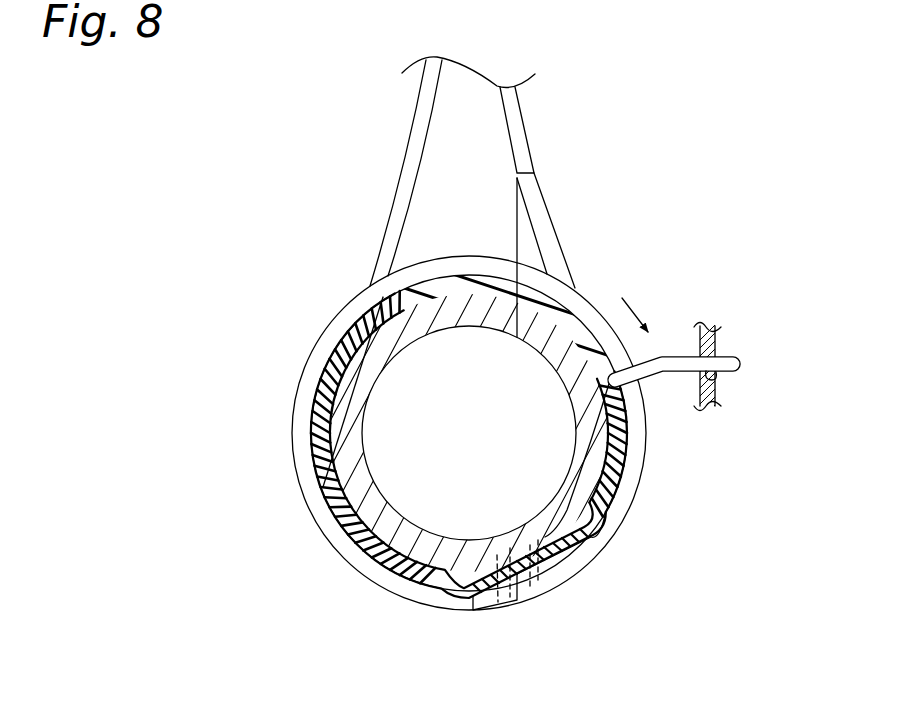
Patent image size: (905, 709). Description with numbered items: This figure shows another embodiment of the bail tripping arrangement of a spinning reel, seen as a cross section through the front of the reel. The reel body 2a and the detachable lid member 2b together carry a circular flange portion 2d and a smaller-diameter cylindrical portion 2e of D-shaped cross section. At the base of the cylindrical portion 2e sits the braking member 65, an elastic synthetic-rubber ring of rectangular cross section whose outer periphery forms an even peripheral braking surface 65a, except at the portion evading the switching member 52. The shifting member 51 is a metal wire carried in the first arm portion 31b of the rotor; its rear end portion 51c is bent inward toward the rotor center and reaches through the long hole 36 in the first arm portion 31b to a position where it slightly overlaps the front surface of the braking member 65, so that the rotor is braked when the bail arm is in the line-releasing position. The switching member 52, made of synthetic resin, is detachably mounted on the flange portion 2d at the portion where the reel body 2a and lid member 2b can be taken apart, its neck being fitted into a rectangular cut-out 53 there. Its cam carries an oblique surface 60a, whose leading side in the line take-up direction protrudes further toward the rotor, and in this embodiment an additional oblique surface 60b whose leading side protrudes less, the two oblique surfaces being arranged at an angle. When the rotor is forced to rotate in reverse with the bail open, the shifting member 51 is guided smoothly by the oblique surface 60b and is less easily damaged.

The reel body 2a is at (385, 235).
The lid member 2b is at (557, 236).
The flange portion 2d is at (370, 570).
The cylindrical portion 2e is at (323, 488).
The braking member 65 is at (320, 403).
The peripheral braking surface 65a is at (628, 483).
The shifting member 51 is at (738, 352).
The rear end portion 51c is at (668, 356).
The long hole 36 is at (718, 373).
The first arm portion 31b is at (724, 406).
The switching member 52 is at (580, 557).
The oblique surface 60a is at (550, 566).
The oblique surface 60b is at (473, 605).
The rectangular cut-out 53 is at (528, 606).